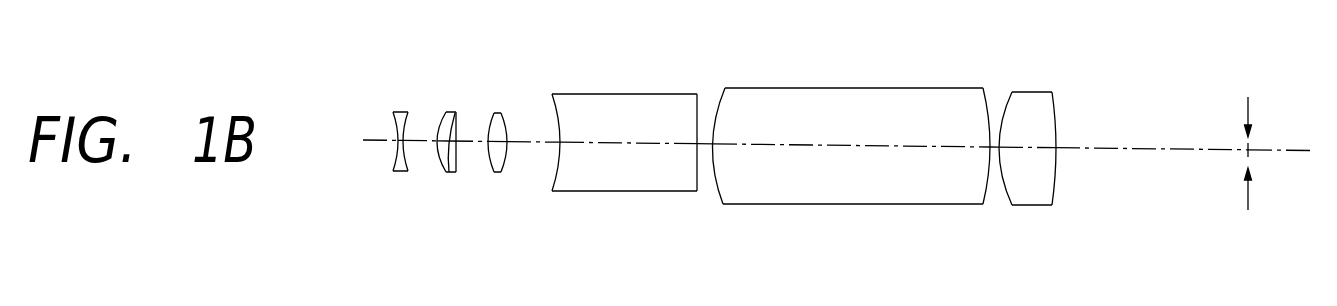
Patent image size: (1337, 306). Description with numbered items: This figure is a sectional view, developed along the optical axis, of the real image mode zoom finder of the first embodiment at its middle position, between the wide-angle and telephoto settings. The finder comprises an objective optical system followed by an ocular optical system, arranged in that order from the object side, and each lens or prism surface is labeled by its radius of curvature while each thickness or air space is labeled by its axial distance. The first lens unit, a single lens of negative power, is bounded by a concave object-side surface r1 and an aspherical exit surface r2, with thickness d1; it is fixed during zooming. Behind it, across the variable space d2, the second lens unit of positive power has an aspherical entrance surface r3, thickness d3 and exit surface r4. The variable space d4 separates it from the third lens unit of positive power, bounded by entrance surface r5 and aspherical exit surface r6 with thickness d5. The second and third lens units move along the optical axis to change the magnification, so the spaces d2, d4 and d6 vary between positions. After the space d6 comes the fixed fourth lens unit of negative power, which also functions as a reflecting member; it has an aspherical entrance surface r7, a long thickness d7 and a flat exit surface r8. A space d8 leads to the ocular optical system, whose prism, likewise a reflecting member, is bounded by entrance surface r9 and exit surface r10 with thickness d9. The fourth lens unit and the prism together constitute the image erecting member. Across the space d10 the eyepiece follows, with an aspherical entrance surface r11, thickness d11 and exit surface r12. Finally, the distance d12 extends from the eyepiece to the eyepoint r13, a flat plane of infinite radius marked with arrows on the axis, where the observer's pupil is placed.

The radius of curvature of first surface r1 is at (393, 127).
The radius of curvature of second surface r2 is at (408, 128).
The radius of curvature of third surface r3 is at (440, 118).
The radius of curvature of fourth surface r4 is at (457, 128).
The radius of curvature of fifth surface r5 is at (489, 127).
The radius of curvature of sixth surface r6 is at (508, 130).
The radius of curvature of seventh surface r7 is at (555, 110).
The radius of curvature of eighth surface r8 is at (697, 118).
The radius of curvature of ninth surface r9 is at (718, 92).
The radius of curvature of tenth surface r10 is at (985, 110).
The radius of curvature of eleventh surface r11 is at (1004, 103).
The radius of curvature of twelfth surface r12 is at (1056, 112).
The eyepoint r13 is at (1248, 97).
The thickness of first lens unit d1 is at (395, 146).
The space between first and second lens units d2 is at (423, 143).
The thickness of second lens unit d3 is at (450, 143).
The space between second and third lens units d4 is at (475, 143).
The thickness of third lens unit d5 is at (497, 143).
The space between third and fourth lens units d6 is at (532, 143).
The thickness of fourth lens unit d7 is at (618, 145).
The space between fourth lens unit and prism d8 is at (702, 145).
The thickness of prism d9 is at (832, 146).
The space between prism and eyepiece d10 is at (995, 147).
The thickness of eyepiece d11 is at (1033, 148).
The space between eyepiece and eyepoint d12 is at (1150, 149).